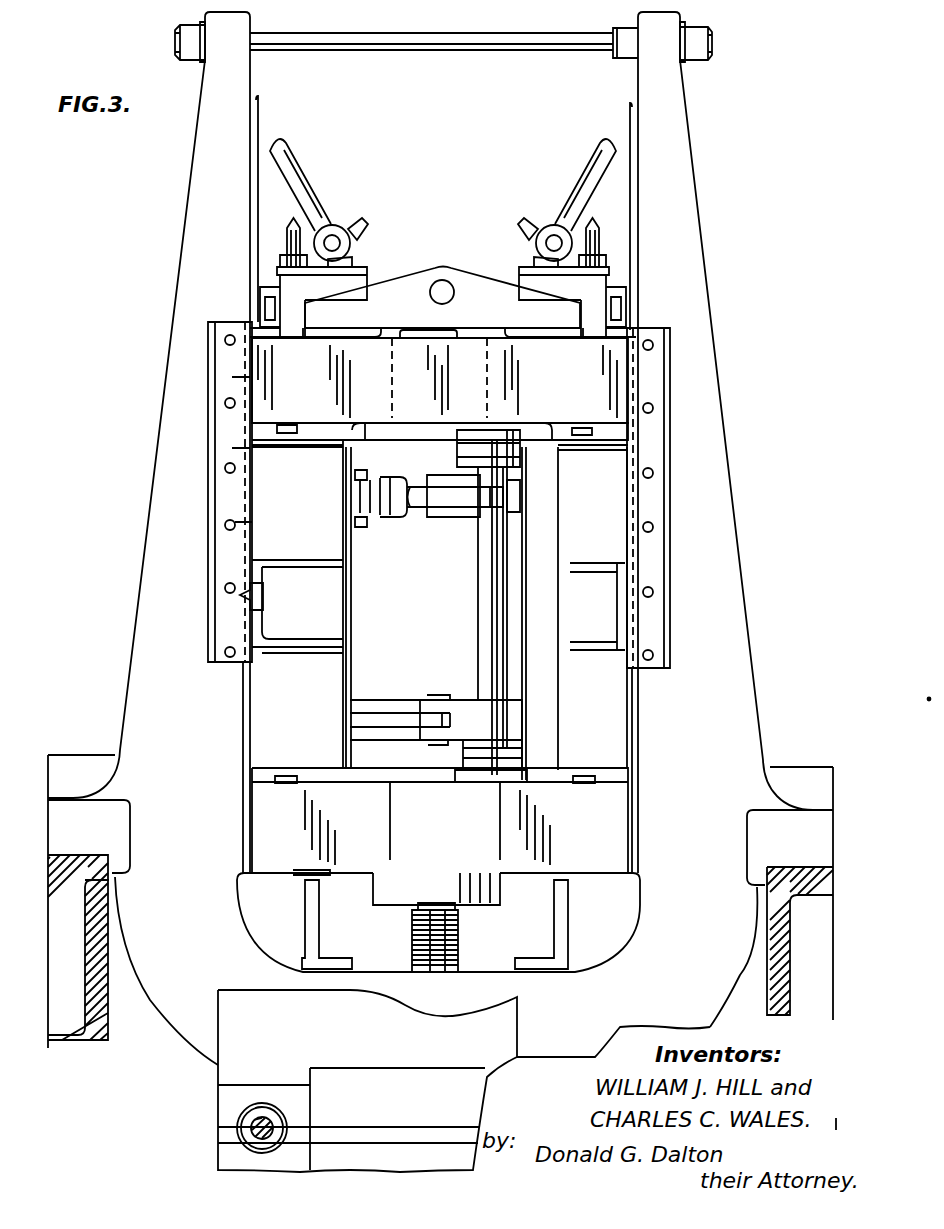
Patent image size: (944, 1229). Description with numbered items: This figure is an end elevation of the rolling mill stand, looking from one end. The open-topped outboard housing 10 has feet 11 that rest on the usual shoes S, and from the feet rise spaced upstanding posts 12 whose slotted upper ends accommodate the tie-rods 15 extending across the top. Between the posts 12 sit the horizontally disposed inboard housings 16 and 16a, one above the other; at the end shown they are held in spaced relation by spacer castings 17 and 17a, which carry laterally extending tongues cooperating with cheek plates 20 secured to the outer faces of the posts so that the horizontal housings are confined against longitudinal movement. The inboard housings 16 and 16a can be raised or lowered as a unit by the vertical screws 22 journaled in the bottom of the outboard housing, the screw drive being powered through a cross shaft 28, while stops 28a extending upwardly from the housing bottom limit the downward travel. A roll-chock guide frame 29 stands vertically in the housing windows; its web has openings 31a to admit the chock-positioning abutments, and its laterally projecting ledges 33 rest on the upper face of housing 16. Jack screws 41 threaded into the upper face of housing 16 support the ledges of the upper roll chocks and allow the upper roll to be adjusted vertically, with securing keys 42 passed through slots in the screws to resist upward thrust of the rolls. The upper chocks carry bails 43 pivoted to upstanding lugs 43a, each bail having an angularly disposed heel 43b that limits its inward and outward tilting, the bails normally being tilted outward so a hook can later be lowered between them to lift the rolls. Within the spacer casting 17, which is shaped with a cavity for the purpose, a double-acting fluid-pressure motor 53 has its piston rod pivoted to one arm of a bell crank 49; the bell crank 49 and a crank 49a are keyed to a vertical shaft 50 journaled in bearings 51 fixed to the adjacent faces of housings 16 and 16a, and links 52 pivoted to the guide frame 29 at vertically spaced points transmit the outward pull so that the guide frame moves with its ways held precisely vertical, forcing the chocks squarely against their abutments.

The outboard housing 10 is at (143, 544).
The feet 11 is at (122, 815).
The upstanding posts 12 is at (200, 178).
The tie-rods 15 is at (444, 55).
The upper inboard housing 16 is at (416, 376).
The lower inboard housing 16a is at (405, 836).
The spacer casting 17 is at (300, 711).
The spacer casting 17a is at (592, 711).
The cheek plates 20 is at (222, 492).
The vertical screws 22 is at (412, 930).
The cross shaft 28 is at (252, 1118).
The stops 28a is at (308, 928).
The roll-chock guide frame 29 is at (403, 321).
The openings 31a is at (446, 330).
The ledges 33 is at (322, 320).
The jack screws 41 is at (288, 248).
The securing keys 42 is at (278, 270).
The bails 43 is at (290, 160).
The lugs 43a is at (358, 263).
The heels 43b is at (357, 240).
The bell crank 49 is at (476, 515).
The crank 49a is at (468, 700).
The vertical shaft 50 is at (482, 582).
The bearings 51 is at (470, 455).
The links 52 is at (422, 720).
The fluid-pressure motor 53 is at (370, 480).
The shoes S is at (98, 1013).